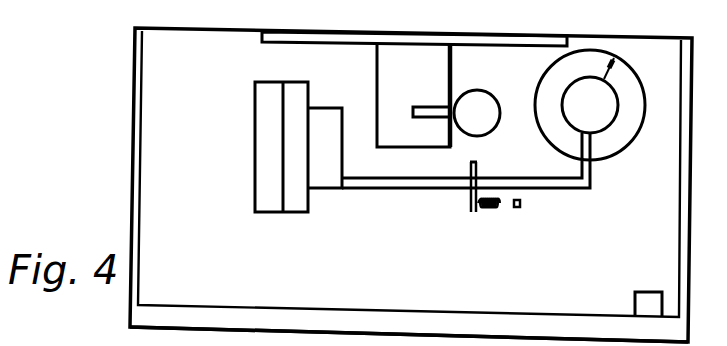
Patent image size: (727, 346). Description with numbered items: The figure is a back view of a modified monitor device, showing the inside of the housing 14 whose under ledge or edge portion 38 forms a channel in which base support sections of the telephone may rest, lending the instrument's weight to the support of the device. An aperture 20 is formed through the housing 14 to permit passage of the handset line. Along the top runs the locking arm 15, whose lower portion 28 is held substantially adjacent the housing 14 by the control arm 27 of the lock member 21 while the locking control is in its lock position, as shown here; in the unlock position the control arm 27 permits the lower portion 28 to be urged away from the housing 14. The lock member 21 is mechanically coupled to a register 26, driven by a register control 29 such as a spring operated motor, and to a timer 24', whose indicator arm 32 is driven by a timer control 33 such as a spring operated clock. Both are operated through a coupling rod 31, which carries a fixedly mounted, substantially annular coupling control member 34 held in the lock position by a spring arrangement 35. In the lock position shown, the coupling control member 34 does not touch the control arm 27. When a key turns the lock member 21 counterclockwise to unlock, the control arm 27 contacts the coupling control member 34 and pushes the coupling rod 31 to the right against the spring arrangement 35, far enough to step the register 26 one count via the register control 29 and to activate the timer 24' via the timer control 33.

The housing 14 is at (426, 287).
The locking arm 15 is at (398, 36).
The aperture 20 is at (635, 300).
The lock member 21 is at (477, 98).
The timer 24' is at (603, 108).
The register 26 is at (295, 201).
The control arm 27 is at (438, 95).
The lower portion 28 is at (400, 68).
The register control 29 is at (323, 173).
The coupling rod 31 is at (397, 190).
The indicator arm 32 is at (605, 77).
The timer control 33 is at (601, 117).
The coupling control member 34 is at (473, 211).
The spring arrangement 35 is at (495, 206).
The under ledge 38 is at (207, 318).